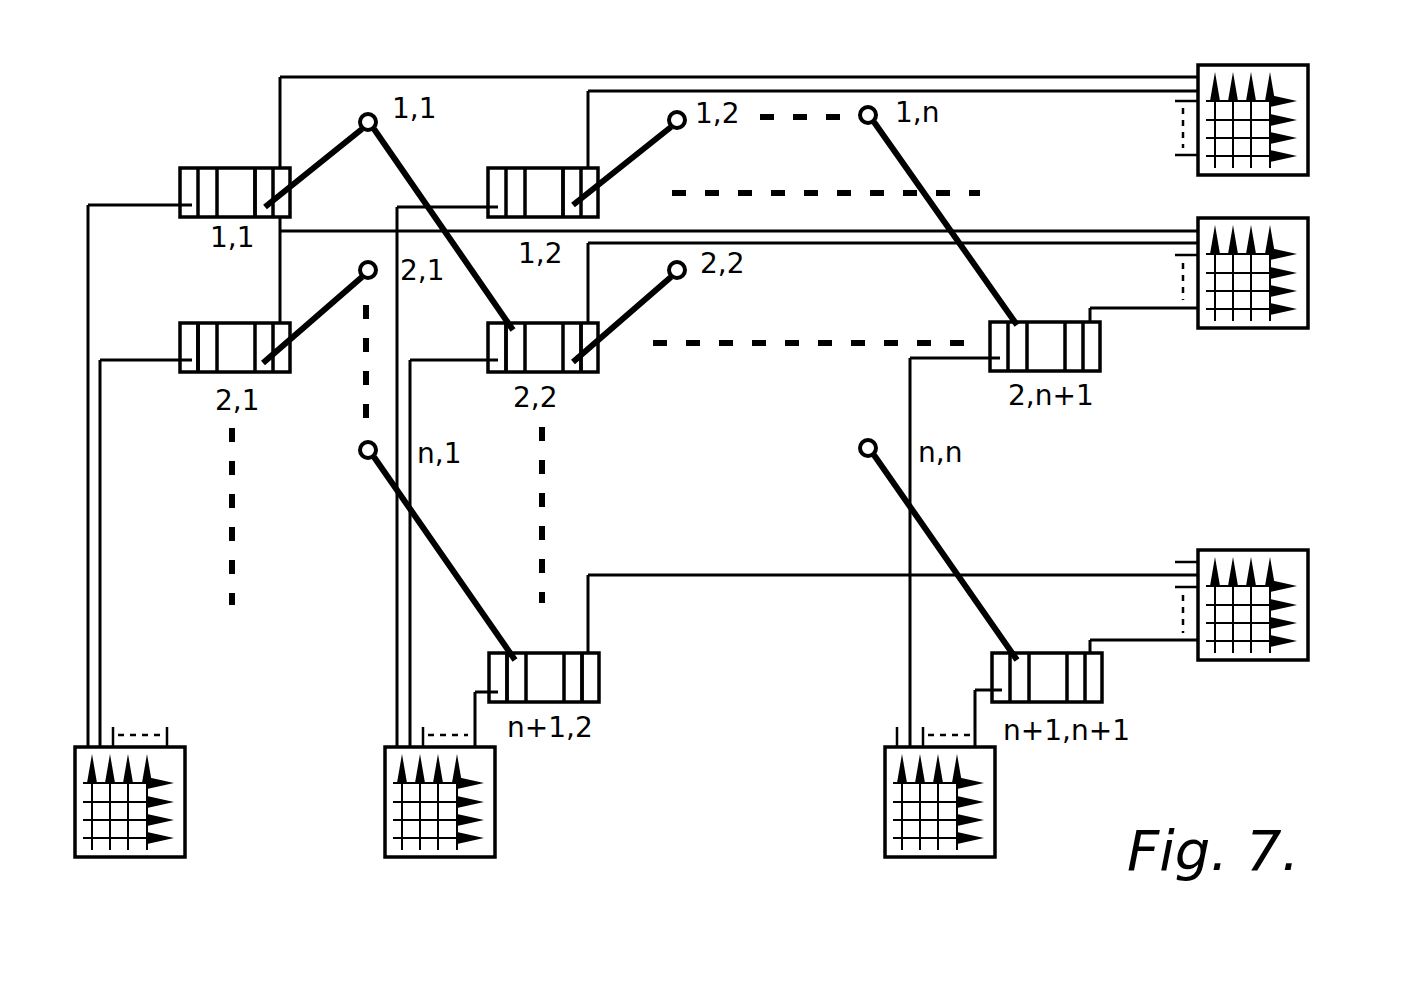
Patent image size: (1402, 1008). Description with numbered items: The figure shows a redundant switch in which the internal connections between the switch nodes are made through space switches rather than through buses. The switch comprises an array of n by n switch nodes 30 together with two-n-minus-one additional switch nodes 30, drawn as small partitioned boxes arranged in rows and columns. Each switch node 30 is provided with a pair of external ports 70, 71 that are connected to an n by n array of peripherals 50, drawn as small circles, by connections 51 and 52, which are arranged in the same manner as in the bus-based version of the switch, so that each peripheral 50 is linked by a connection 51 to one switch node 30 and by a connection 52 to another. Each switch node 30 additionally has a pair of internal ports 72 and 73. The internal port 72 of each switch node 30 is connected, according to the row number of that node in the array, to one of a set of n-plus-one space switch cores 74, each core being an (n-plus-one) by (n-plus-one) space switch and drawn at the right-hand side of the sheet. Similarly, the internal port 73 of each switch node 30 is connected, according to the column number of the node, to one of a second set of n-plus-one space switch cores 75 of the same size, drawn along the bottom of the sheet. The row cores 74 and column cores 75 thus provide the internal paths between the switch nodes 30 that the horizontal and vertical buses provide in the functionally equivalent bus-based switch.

The switch node 30 is at (232, 318).
The peripheral 50 is at (361, 443).
The connection 51 is at (320, 417).
The connection 52 is at (382, 478).
The external port 70 is at (263, 180).
The external port 71 is at (207, 360).
The internal port 72 is at (587, 363).
The internal port 73 is at (187, 342).
The space switch core 74 is at (1245, 615).
The space switch core 75 is at (912, 812).